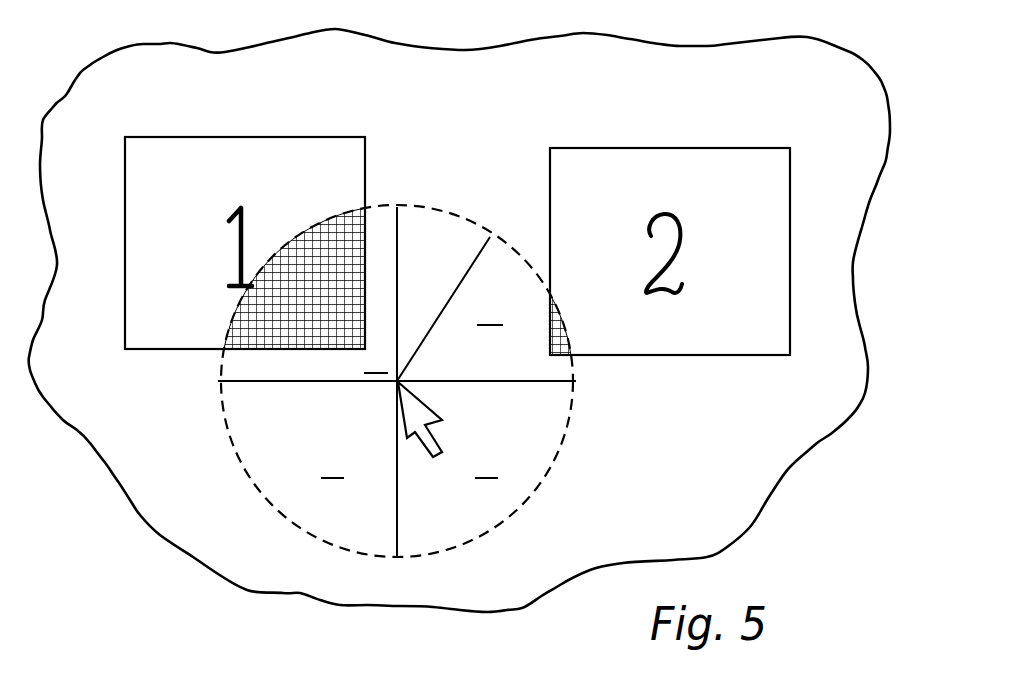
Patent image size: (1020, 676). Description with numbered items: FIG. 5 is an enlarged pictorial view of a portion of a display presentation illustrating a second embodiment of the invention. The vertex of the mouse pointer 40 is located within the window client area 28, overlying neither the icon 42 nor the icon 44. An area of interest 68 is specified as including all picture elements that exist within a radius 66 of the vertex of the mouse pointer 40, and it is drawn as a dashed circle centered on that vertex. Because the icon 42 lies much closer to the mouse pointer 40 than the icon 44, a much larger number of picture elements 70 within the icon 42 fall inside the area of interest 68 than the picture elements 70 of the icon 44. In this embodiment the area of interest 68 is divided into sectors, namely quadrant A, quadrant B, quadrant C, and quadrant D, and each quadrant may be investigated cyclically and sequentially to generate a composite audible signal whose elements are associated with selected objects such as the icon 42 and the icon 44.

The window client area 28 is at (497, 108).
The icon 42 is at (238, 137).
The icon 44 is at (671, 148).
The mouse pointer 40 is at (437, 456).
The radius 66 is at (427, 333).
The area of interest 68 is at (547, 481).
The picture elements 70 is at (362, 224).